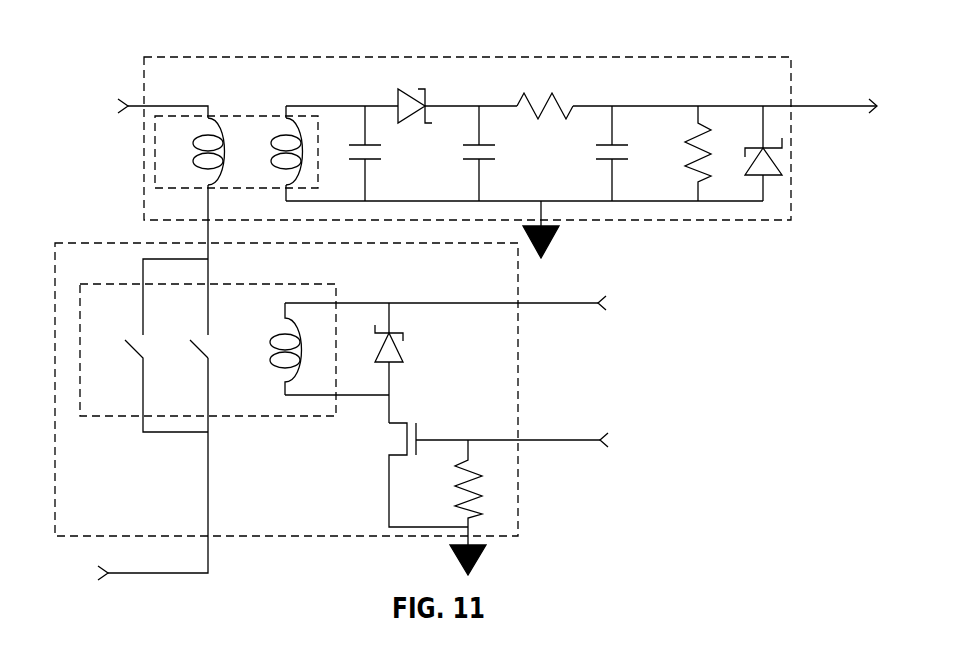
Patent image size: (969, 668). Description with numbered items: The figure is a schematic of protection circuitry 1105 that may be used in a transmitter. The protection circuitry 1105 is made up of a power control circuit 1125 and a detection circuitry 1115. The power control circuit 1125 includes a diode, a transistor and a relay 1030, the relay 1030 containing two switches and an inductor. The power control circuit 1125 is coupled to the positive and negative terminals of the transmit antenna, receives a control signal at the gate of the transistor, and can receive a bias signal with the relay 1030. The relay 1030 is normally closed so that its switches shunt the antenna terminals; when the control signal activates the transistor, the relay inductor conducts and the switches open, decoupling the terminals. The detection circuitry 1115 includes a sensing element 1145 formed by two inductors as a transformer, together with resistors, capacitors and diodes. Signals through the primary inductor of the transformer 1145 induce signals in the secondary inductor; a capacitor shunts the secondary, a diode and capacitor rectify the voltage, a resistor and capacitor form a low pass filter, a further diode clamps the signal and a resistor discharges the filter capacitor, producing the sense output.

The protection circuitry 1105 is at (124, 46).
The detection circuitry 1115 is at (336, 58).
The sensing element 1145 is at (222, 117).
The relay 1030 is at (318, 284).
The power control circuit 1125 is at (297, 537).